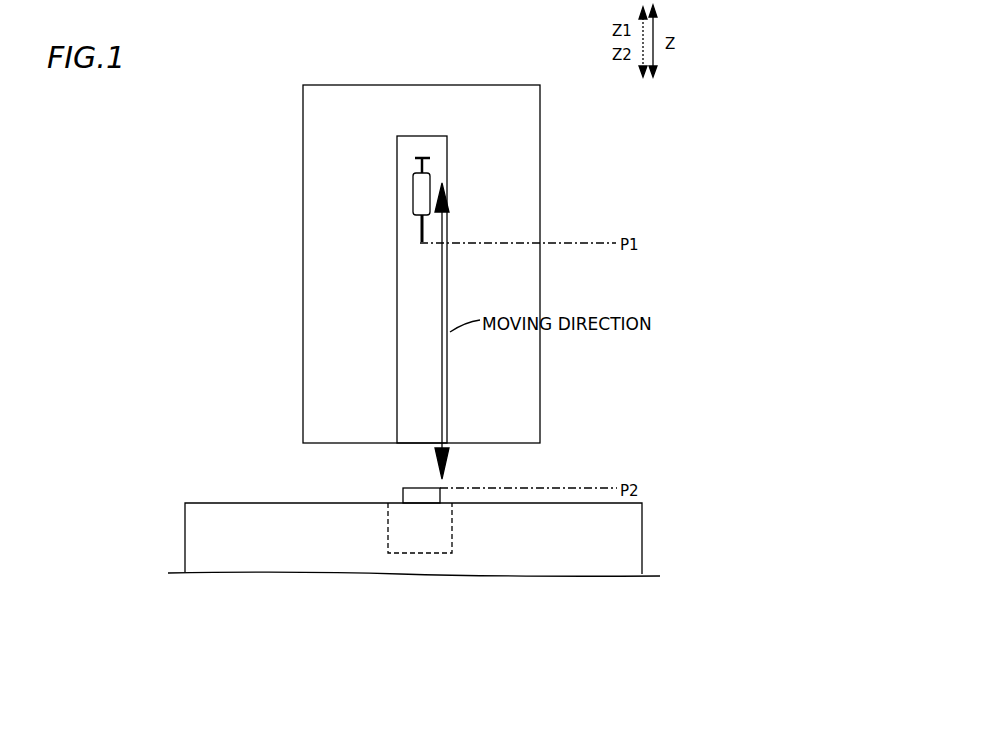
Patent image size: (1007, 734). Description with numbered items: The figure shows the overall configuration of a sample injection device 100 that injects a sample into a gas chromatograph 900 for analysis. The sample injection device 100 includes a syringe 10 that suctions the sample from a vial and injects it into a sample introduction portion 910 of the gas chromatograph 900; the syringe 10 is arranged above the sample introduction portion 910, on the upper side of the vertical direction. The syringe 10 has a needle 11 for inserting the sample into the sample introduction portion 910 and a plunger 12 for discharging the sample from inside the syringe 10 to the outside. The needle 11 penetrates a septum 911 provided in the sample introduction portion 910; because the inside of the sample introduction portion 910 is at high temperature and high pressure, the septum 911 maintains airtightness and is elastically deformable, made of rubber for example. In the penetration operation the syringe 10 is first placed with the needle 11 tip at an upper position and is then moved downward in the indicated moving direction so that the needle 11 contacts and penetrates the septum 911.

The sample injection device 100 is at (330, 74).
The syringe 10 is at (410, 196).
The needle 11 is at (420, 232).
The plunger 12 is at (418, 169).
The gas chromatograph 900 is at (236, 494).
The sample introduction portion 910 is at (388, 531).
The septum 911 is at (403, 497).